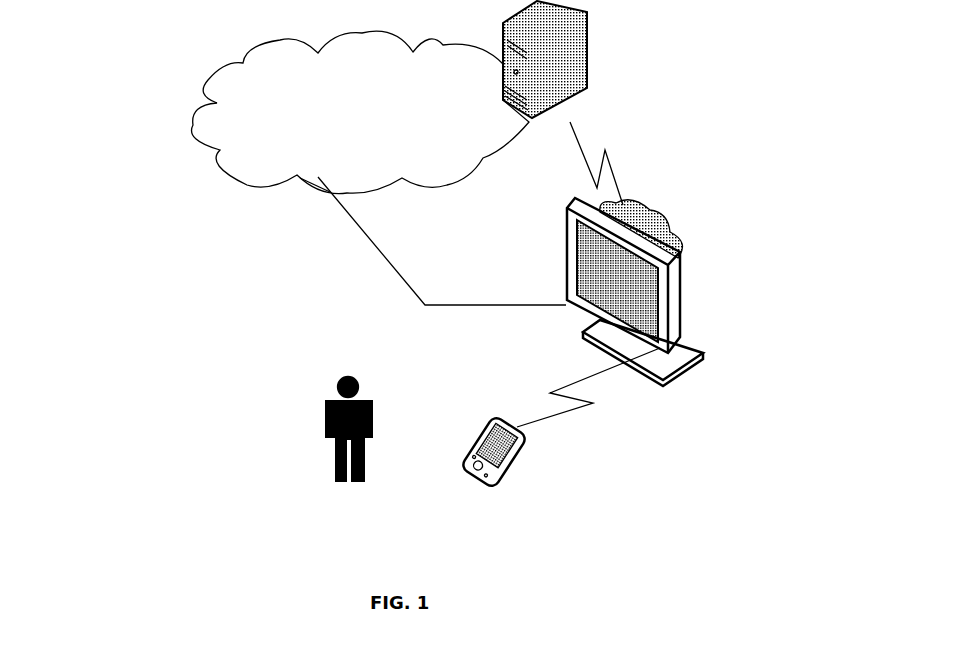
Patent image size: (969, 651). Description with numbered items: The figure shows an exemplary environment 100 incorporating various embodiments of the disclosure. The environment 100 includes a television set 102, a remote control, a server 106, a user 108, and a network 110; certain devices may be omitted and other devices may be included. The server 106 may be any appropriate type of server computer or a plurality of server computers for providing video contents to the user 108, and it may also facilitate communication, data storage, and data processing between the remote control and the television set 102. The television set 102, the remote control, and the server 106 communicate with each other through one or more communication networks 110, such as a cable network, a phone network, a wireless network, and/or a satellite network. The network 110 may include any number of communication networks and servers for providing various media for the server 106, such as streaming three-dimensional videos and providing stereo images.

The environment 100 is at (93, 22).
The television set 102 is at (700, 340).
The server 106 is at (590, 65).
The user 108 is at (328, 450).
The network 110 is at (381, 123).